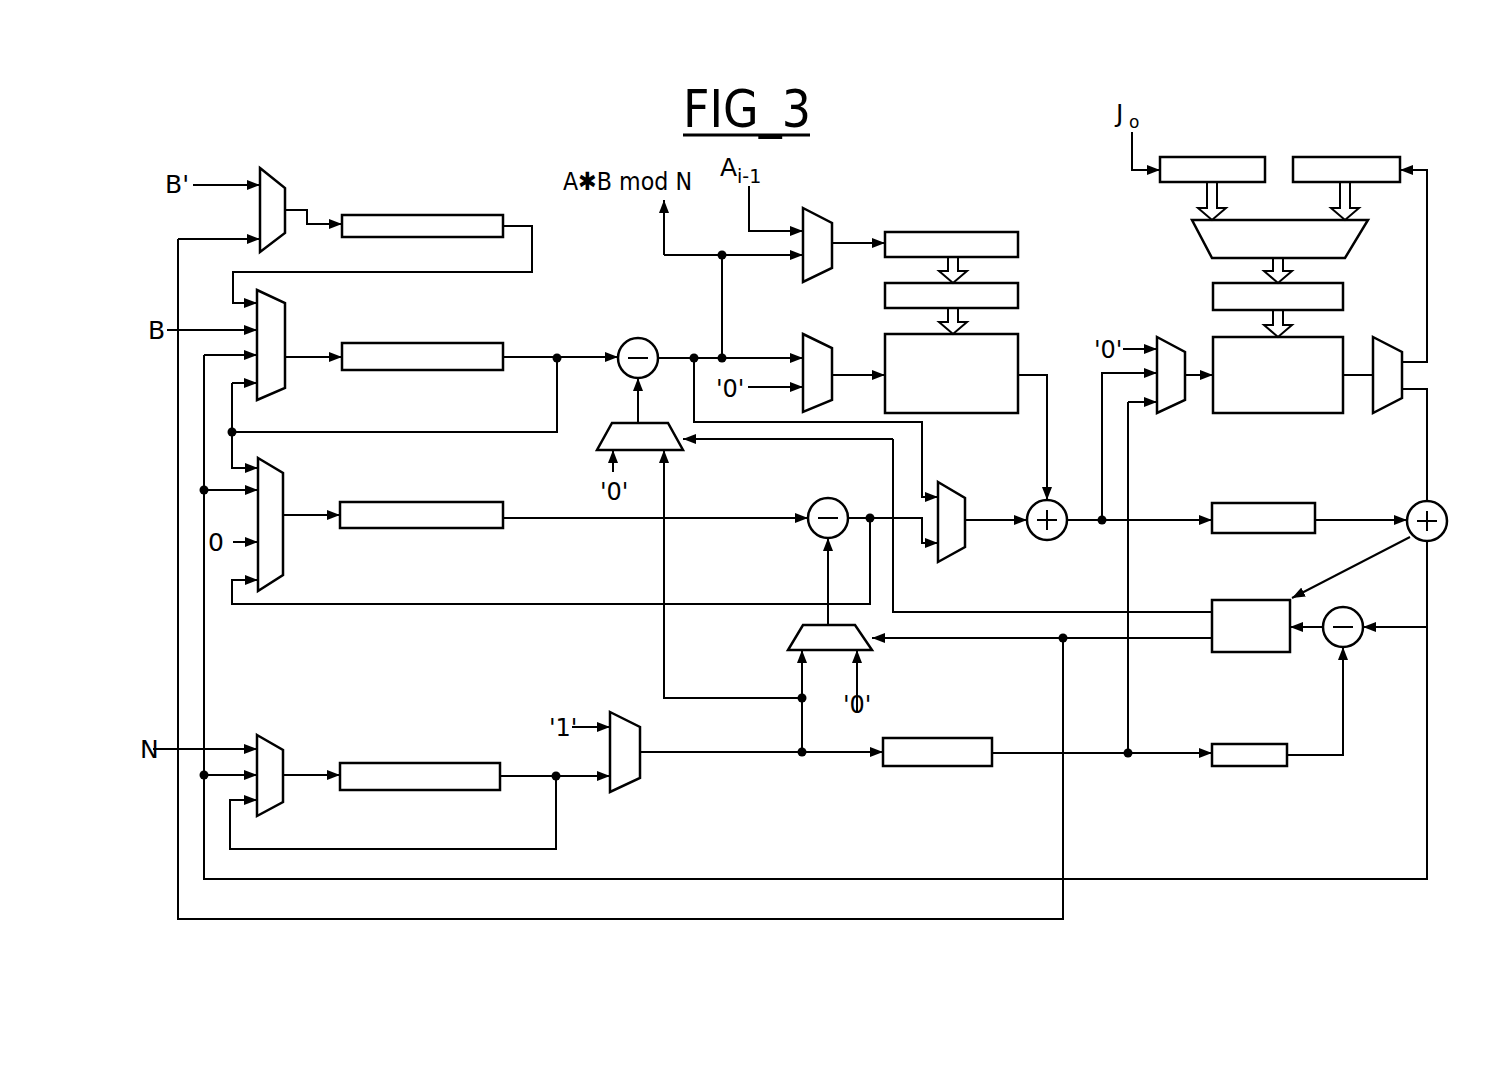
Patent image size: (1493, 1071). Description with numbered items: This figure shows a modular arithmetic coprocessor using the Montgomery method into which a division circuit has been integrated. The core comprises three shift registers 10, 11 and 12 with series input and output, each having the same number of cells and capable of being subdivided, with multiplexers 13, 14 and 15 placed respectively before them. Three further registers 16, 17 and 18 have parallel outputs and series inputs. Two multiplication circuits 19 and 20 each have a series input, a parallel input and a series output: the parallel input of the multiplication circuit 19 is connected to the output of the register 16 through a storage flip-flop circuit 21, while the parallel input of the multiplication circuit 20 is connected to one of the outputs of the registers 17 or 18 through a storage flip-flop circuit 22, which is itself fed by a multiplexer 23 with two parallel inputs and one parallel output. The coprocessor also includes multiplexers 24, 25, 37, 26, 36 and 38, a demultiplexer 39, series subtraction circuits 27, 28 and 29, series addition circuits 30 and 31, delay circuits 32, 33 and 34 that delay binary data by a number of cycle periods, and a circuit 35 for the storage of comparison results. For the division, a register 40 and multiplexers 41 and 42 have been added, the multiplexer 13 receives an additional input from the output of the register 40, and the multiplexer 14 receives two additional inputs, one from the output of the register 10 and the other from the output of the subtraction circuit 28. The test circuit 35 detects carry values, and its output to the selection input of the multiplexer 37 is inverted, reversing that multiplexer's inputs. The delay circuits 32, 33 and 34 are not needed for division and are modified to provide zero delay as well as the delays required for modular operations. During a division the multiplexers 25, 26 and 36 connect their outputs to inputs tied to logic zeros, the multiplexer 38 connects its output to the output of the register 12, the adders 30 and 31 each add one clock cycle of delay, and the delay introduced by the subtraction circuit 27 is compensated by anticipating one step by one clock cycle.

The shift register 10 is at (407, 343).
The shift register 11 is at (413, 528).
The shift register 12 is at (418, 763).
The multiplexer 13 is at (287, 390).
The multiplexer 14 is at (285, 535).
The multiplexer 15 is at (272, 735).
The register 16 is at (1018, 242).
The register 17 is at (1218, 157).
The register 18 is at (1348, 157).
The multiplication circuit 19 is at (1018, 346).
The multiplication circuit 20 is at (1275, 413).
The storage flip-flop circuit 21 is at (1018, 294).
The storage flip-flop circuit 22 is at (1343, 296).
The multiplexer 23 is at (1368, 235).
The multiplexer 24 is at (818, 210).
The multiplexer 25 is at (815, 337).
The multiplexer 26 is at (1165, 337).
The series subtraction circuit 27 is at (638, 338).
The series subtraction circuit 28 is at (838, 500).
The series subtraction circuit 29 is at (1335, 610).
The series addition circuit 30 is at (1050, 540).
The series addition circuit 31 is at (1447, 525).
The delay circuit 32 is at (938, 766).
The delay circuit 33 is at (1250, 766).
The delay circuit 34 is at (1258, 533).
The circuit for the storage of comparison results 35 is at (1247, 652).
The multiplexer 36 is at (600, 440).
The multiplexer 37 is at (790, 630).
The multiplexer 38 is at (635, 782).
The demultiplexer 39 is at (1385, 413).
The register 40 is at (440, 215).
The multiplexer 41 is at (272, 172).
The multiplexer 42 is at (966, 550).